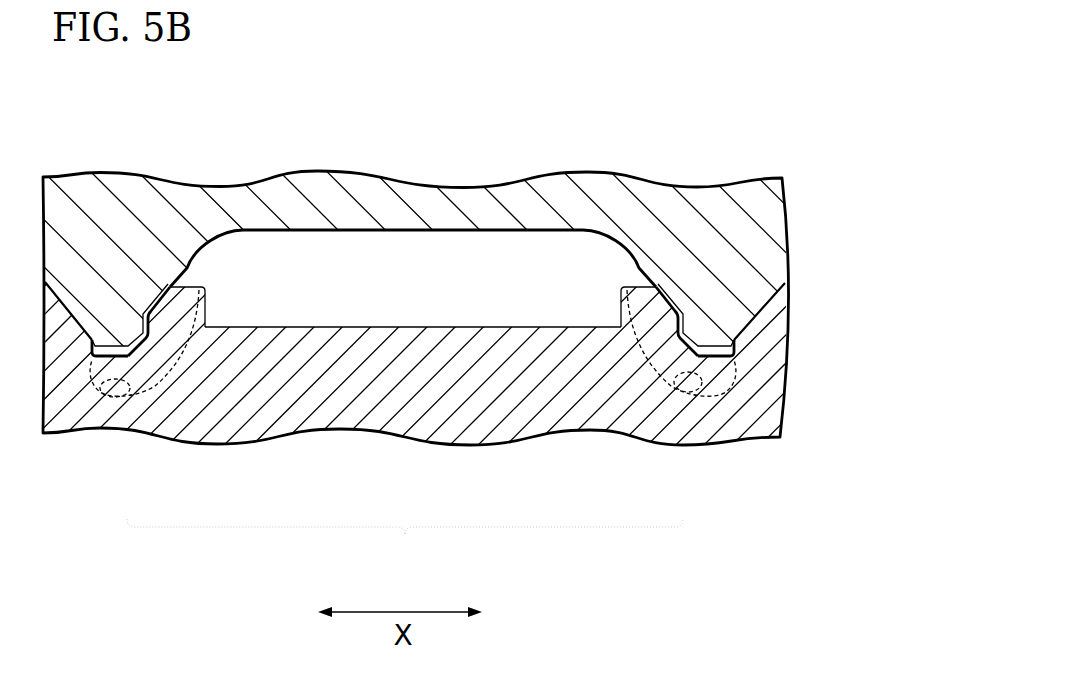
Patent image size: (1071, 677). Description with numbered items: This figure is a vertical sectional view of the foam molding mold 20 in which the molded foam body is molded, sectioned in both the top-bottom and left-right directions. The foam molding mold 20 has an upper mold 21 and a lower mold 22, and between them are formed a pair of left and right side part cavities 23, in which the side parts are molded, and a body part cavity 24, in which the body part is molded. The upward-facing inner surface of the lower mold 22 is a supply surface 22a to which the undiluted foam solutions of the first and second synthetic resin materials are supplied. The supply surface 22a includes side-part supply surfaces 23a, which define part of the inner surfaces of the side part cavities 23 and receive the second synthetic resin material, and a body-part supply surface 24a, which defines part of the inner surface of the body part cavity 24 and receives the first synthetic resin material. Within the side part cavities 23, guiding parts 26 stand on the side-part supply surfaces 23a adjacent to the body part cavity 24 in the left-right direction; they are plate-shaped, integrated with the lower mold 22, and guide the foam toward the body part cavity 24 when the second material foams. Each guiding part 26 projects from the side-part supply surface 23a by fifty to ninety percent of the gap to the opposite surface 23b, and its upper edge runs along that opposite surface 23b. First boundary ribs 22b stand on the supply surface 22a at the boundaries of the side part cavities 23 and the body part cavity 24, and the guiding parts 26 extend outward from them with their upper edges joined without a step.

The foam molding mold 20 is at (872, 198).
The upper mold 21 is at (790, 212).
The lower mold 22 is at (797, 312).
The supply surface 22a is at (405, 545).
The first boundary ribs 22b is at (208, 300).
The side part cavities 23 is at (167, 279).
The side-part supply surfaces 23a is at (126, 395).
The opposite surface 23b is at (114, 352).
The body part cavity 24 is at (491, 226).
The body-part supply surface 24a is at (409, 323).
The guiding parts 26 is at (163, 308).